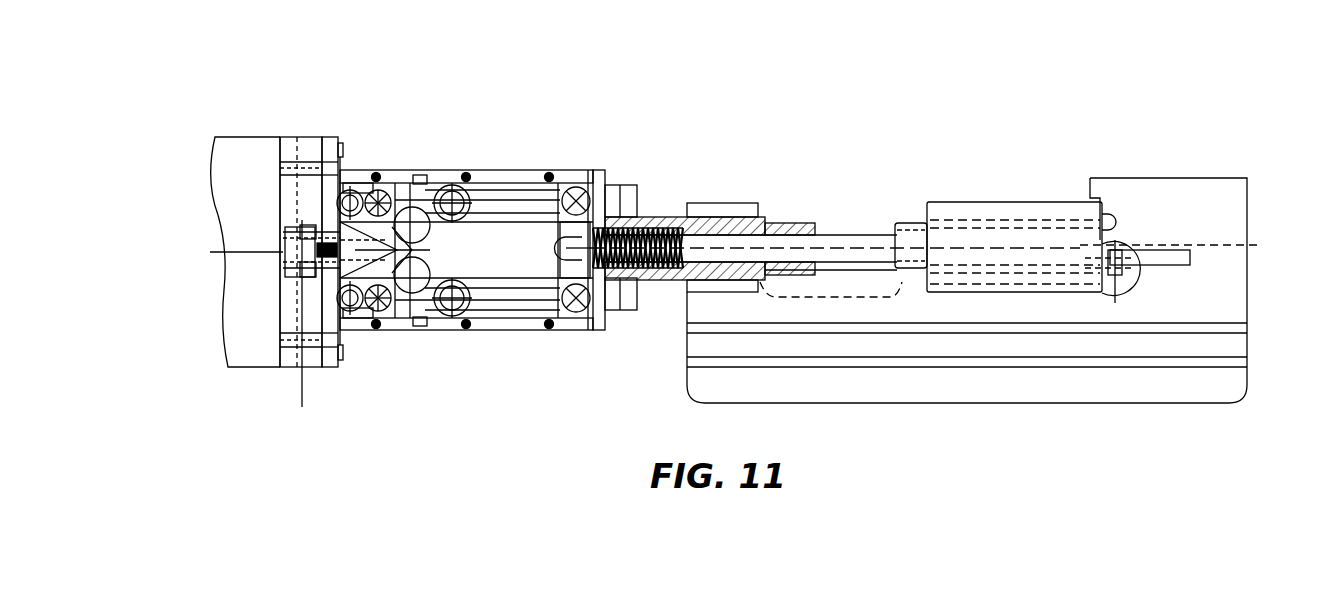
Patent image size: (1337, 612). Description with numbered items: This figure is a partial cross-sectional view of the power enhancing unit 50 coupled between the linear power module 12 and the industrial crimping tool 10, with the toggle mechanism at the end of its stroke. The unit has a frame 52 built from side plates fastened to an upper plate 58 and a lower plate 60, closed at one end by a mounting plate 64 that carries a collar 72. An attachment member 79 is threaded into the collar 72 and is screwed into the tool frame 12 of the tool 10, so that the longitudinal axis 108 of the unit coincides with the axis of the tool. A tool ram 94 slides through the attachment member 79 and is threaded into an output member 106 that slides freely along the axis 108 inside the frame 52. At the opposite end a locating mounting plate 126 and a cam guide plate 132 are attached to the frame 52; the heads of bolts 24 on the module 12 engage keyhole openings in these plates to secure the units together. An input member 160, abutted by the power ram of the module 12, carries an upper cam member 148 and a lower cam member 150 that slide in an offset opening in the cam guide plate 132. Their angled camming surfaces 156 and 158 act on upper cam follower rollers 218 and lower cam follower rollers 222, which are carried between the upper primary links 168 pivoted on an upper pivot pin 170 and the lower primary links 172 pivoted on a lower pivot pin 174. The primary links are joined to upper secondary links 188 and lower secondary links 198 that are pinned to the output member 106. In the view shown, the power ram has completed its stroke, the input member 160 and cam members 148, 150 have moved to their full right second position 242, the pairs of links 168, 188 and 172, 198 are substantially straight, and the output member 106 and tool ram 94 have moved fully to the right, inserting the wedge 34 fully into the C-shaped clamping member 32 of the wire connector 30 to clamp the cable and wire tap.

The industrial crimping tool 10 is at (936, 410).
The linear power module 12 is at (234, 132).
The bolts 24 is at (342, 143).
The wire connector 30 is at (990, 180).
The C-shaped clamping member 32 is at (1053, 190).
The wedge 34 is at (890, 215).
The power enhancing unit 50 is at (560, 167).
The frame 52 is at (597, 76).
The upper plate 58 is at (450, 183).
The lower plate 60 is at (490, 333).
The mounting plate 64 is at (597, 172).
The collar 72 is at (625, 185).
The attachment member 79 is at (688, 190).
The tool ram 94 is at (847, 235).
The output member 106 is at (560, 232).
The longitudinal axis 108 is at (216, 255).
The locating mounting plate 126 is at (330, 132).
The cam guide plate 132 is at (296, 132).
The upper cam member 148 is at (313, 219).
The lower cam member 150 is at (313, 286).
The angled camming surface 156 is at (417, 235).
The angled camming surface 158 is at (417, 272).
The input member 160 is at (280, 262).
The upper primary links 168 is at (415, 185).
The upper pivot pin 170 is at (353, 175).
The lower primary links 172 is at (418, 322).
The lower pivot pin 174 is at (358, 327).
The upper secondary links 188 is at (510, 190).
The lower secondary links 198 is at (536, 312).
The upper cam follower rollers 218 is at (413, 175).
The lower cam follower rollers 222 is at (413, 327).
The second position 242 is at (303, 383).